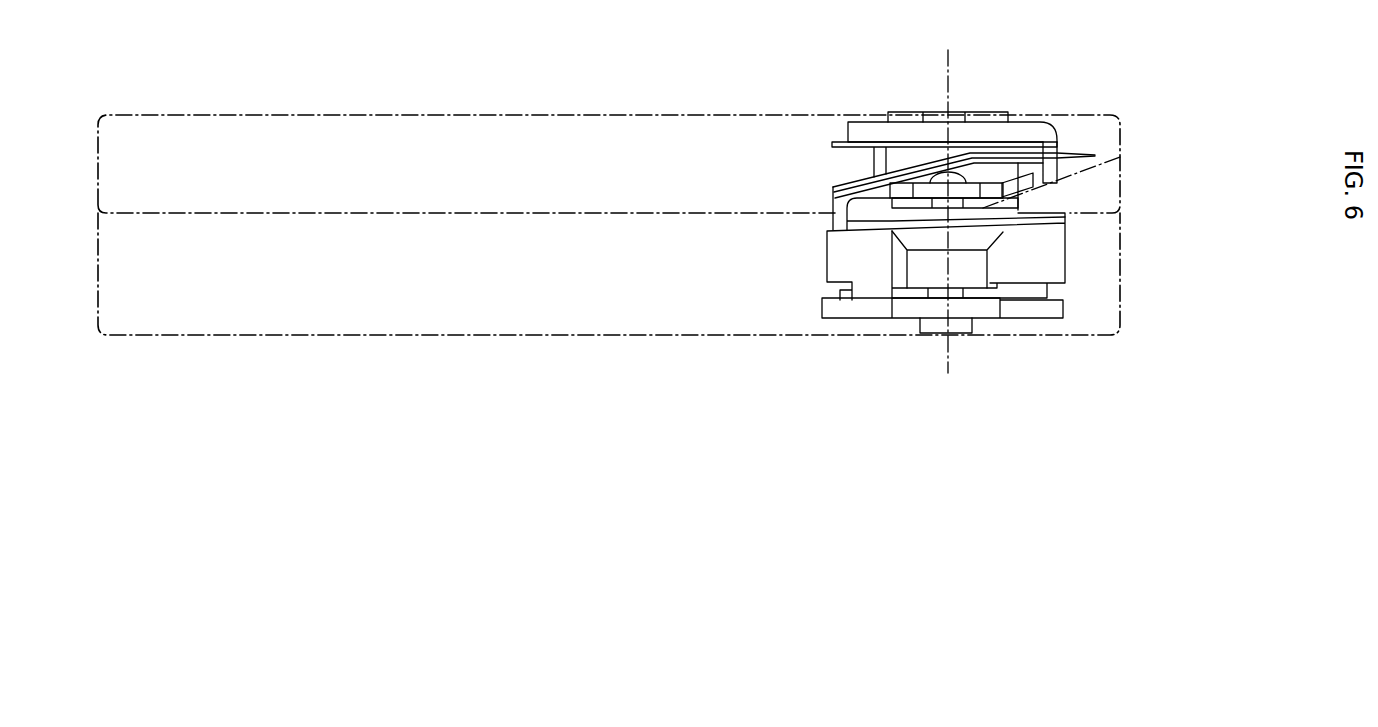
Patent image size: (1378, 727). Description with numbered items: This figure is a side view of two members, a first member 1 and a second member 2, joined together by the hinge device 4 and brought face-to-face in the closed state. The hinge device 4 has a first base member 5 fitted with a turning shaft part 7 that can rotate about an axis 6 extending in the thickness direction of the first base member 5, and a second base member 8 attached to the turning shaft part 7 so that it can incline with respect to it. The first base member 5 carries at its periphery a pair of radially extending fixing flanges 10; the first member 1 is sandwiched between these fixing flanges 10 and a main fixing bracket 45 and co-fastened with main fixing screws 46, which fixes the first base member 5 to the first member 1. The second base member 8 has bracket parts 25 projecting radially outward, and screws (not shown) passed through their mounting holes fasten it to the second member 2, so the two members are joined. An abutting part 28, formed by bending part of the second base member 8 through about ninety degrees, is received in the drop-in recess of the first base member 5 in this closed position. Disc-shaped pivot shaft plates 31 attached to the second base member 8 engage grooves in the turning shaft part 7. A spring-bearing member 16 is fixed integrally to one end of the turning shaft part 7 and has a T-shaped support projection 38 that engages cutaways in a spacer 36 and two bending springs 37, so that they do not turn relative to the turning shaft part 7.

The first member 1 is at (97, 283).
The second member 2 is at (95, 157).
The hinge device 4 is at (1033, 103).
The first base member 5 is at (1053, 255).
The axis 6 is at (946, 63).
The turning shaft part 7 is at (873, 162).
The second base member 8 is at (972, 197).
The fixing flanges 10 is at (917, 258).
The spring-bearing member 16 is at (1027, 128).
The bracket parts 25 is at (907, 195).
The abutting part 28 is at (830, 231).
The pivot shaft plates 31 is at (933, 193).
The spacer 36 is at (1062, 148).
The bending springs 37 is at (1095, 155).
The support projection 38 is at (1050, 183).
The main fixing bracket 45 is at (1047, 312).
The main fixing screws 46 is at (960, 333).